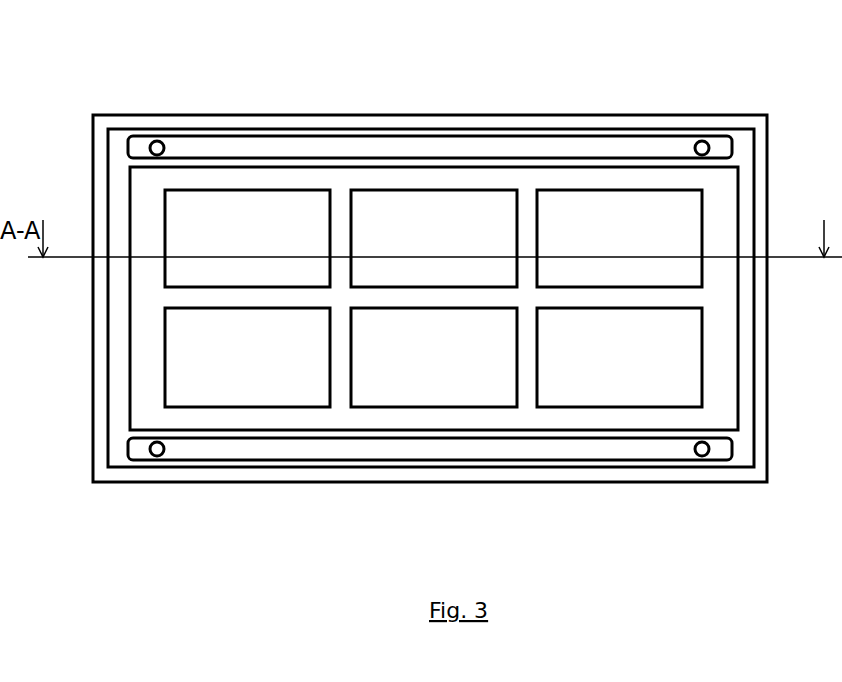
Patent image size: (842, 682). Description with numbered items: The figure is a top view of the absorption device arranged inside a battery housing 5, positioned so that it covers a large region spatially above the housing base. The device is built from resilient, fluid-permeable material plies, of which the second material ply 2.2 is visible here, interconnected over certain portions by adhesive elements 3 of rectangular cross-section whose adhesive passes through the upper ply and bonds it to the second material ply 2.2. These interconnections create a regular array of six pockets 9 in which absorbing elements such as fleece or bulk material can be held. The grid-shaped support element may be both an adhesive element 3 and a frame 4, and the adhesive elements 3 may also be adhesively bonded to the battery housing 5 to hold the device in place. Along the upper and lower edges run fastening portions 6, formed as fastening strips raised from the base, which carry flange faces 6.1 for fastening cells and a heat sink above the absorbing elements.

The second material ply 2.2 is at (225, 225).
The adhesive elements 3 is at (434, 243).
The frame 4 is at (338, 186).
The battery housing 5 is at (488, 121).
The fastening portions 6 is at (444, 148).
The flange faces 6.1 is at (157, 141).
The pockets 9 is at (618, 363).